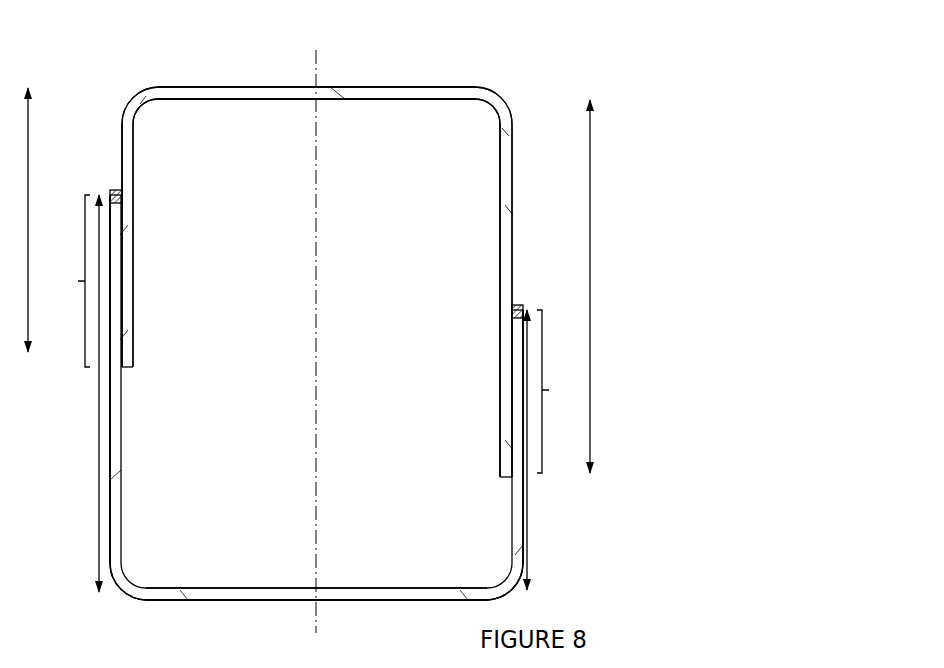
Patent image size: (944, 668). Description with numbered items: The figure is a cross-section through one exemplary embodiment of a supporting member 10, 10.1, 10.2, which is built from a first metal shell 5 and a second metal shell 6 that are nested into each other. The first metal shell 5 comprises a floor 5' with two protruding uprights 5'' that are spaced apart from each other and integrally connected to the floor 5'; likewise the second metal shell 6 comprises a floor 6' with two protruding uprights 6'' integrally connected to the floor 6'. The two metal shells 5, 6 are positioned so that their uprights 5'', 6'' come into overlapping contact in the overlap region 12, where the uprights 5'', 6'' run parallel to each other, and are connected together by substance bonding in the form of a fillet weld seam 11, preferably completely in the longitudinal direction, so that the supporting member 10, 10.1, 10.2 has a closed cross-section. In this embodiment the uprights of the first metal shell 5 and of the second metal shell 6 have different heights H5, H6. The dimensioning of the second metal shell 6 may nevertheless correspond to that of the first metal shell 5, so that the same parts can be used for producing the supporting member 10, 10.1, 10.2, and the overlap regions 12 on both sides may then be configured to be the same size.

The supporting member 10 is at (327, 48).
The supporting member 10.1 is at (317, 248).
The supporting member 10.2 is at (316, 309).
The first metal shell 5 is at (316, 288).
The floor of first metal shell 5' is at (316, 146).
The uprights of first metal shell 5'' is at (311, 300).
The second metal shell 6 is at (316, 397).
The floor of second metal shell 6' is at (316, 542).
The uprights of second metal shell 6'' is at (316, 379).
The fillet weld seam 11 is at (118, 193).
The overlap region 12 is at (311, 334).
The height of first metal shell uprights H5 is at (309, 280).
The height of second metal shell uprights H6 is at (310, 393).